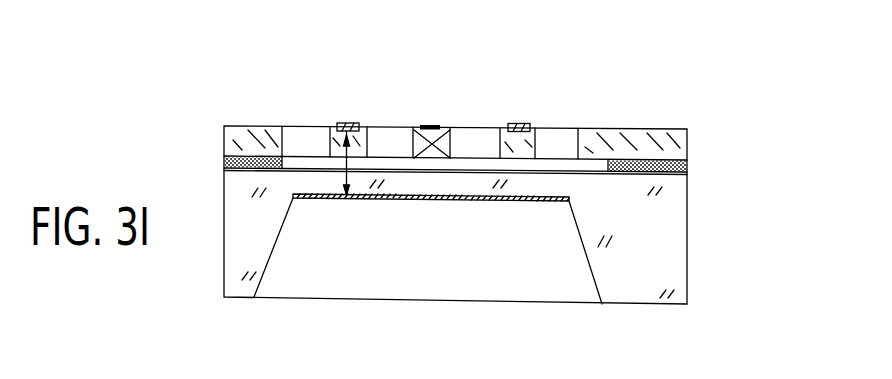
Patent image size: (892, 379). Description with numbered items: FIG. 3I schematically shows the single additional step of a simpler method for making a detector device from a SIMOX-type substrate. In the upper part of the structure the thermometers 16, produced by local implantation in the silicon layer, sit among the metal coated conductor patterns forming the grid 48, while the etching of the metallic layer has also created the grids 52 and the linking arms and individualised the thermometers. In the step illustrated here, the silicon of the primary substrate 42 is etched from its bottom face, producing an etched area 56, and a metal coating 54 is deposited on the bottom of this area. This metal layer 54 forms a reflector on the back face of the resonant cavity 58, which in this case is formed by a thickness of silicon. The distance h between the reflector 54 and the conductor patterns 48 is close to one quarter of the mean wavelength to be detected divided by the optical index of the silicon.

The thermometer 16 is at (460, 129).
The primary substrate 42 is at (668, 227).
The grid 48 is at (345, 123).
The grid 52 is at (542, 126).
The metal coating 54 is at (425, 203).
The etched area 56 is at (495, 288).
The resonant cavity 58 is at (529, 184).
The distance h is at (330, 199).